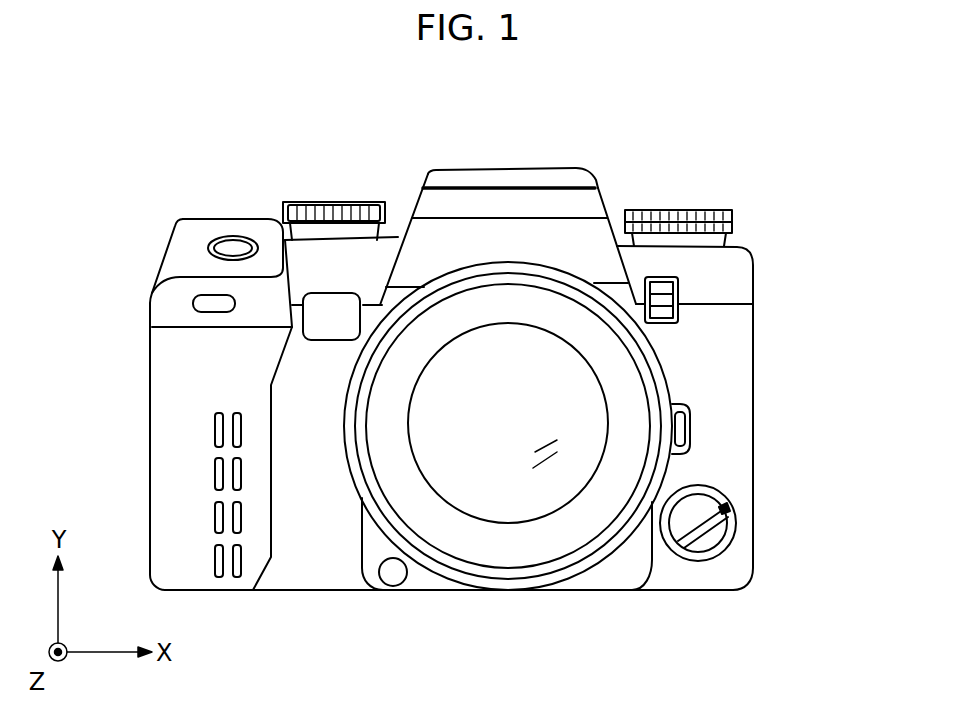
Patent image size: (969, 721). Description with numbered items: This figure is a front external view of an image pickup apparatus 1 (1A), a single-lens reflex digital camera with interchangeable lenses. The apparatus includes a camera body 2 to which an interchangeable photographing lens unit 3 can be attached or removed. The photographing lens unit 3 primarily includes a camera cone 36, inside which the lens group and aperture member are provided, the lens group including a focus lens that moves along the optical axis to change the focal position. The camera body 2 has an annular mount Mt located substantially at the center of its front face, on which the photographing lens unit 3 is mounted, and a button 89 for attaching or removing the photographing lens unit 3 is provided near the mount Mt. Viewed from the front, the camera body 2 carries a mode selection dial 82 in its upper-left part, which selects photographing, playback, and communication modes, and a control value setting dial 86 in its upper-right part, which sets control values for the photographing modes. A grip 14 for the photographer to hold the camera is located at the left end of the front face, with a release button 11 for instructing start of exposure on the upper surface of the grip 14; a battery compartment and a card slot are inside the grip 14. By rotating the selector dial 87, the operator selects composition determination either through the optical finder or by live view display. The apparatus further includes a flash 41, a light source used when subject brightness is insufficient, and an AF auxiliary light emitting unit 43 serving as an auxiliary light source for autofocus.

The image pickup apparatus 1 is at (473, 333).
The image pickup apparatus 1A is at (778, 110).
The camera body 2 is at (753, 372).
The photographing lens unit 3 is at (572, 540).
The release button 11 is at (233, 240).
The grip 14 is at (152, 444).
The camera cone 36 is at (663, 347).
The flash 41 is at (598, 181).
The AF auxiliary light emitting unit 43 is at (318, 337).
The mode selection dial 82 is at (335, 201).
The control value setting dial 86 is at (677, 210).
The selector dial 87 is at (678, 288).
The button 89 is at (690, 432).
The mount Mt is at (348, 457).